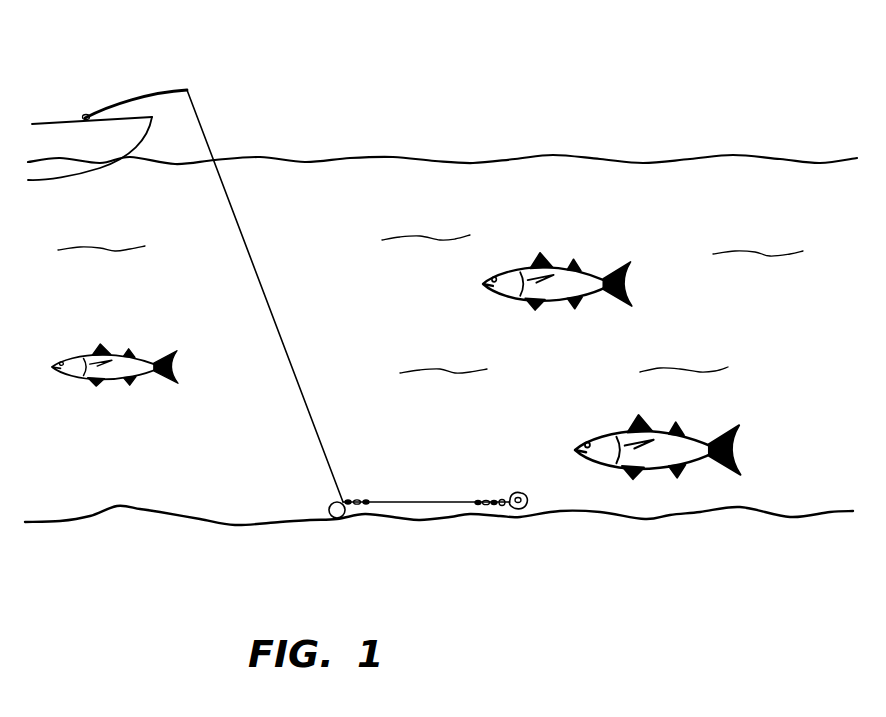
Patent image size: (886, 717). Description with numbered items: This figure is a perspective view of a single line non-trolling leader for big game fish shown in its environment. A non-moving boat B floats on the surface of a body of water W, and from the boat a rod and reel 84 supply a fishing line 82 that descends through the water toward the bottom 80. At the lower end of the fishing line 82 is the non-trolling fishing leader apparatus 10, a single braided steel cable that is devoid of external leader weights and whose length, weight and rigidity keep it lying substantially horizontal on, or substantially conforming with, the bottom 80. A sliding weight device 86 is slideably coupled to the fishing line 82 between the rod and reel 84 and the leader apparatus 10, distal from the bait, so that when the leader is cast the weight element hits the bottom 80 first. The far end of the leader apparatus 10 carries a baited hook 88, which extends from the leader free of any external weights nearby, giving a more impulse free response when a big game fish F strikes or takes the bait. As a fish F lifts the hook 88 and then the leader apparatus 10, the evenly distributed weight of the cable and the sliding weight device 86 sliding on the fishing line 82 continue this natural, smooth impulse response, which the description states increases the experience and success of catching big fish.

The non-trolling fishing leader apparatus 10 is at (438, 482).
The bottom of the body of water 80 is at (155, 508).
The fishing line 82 is at (280, 308).
The rod and reel 84 is at (137, 59).
The sliding weight device 86 is at (345, 500).
The baited hook 88 is at (518, 492).
The boat B is at (80, 152).
The body of water W is at (722, 331).
The big game fish F is at (678, 440).